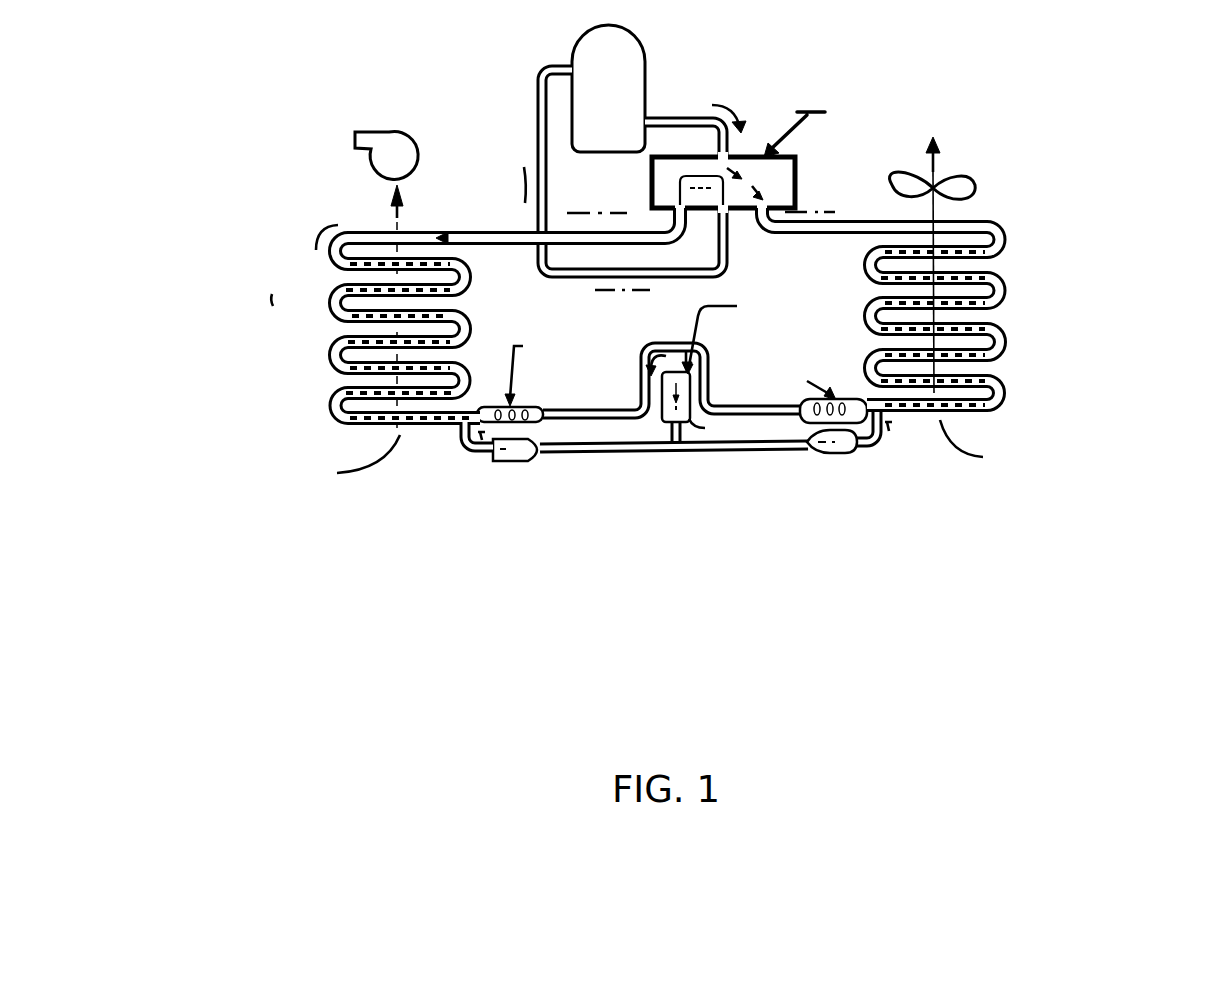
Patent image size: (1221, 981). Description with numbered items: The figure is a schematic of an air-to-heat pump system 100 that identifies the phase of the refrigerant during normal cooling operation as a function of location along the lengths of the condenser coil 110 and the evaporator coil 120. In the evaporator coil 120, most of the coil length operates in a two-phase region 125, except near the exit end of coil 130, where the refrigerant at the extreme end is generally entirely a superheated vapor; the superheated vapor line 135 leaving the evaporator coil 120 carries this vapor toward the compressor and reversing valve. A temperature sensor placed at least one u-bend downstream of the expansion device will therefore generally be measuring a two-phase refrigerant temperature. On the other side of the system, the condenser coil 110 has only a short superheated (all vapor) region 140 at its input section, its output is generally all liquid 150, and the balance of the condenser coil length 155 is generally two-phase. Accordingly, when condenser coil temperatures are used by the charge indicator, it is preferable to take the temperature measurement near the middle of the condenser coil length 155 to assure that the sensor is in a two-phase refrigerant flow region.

The air-to-heat pump system 100 is at (679, 291).
The condenser coil 110 is at (976, 290).
The evaporator coil 120 is at (424, 341).
The two-phase region 125 is at (327, 398).
The exit end of coil 130 is at (322, 296).
The superheated vapor suction line 135 is at (410, 232).
The superheated (all vapor) region 140 is at (990, 215).
The all liquid 150 is at (1010, 384).
The condenser coil length 155 is at (1003, 273).